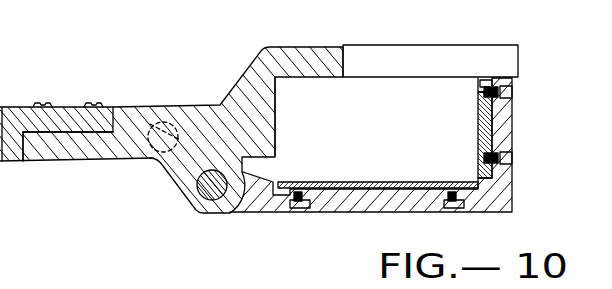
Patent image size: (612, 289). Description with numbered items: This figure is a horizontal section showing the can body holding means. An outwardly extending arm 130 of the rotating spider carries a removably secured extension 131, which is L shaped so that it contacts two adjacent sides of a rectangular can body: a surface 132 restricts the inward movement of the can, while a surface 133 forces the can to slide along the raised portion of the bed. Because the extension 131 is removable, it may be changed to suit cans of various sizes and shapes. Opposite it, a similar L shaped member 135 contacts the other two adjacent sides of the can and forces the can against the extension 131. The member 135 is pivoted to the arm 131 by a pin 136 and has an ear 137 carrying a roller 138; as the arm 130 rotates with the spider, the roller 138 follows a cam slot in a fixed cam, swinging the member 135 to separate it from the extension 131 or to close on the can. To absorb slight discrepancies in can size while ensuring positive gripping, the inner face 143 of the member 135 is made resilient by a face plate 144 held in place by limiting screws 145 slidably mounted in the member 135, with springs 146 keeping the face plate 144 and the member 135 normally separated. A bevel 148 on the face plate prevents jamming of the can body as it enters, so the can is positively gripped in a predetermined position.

The outwardly extending arm 130 is at (62, 108).
The extension 131 is at (338, 41).
The surface 132 is at (277, 127).
The surface 133 is at (380, 78).
The L shaped member 135 is at (372, 213).
The pin 136 is at (210, 200).
The ear 137 is at (163, 172).
The roller 138 is at (178, 106).
The inner face 143 is at (378, 172).
The face plate 144 is at (480, 119).
The limiting screw 145 is at (503, 95).
The spring 146 is at (502, 99).
The bevel 148 is at (484, 85).